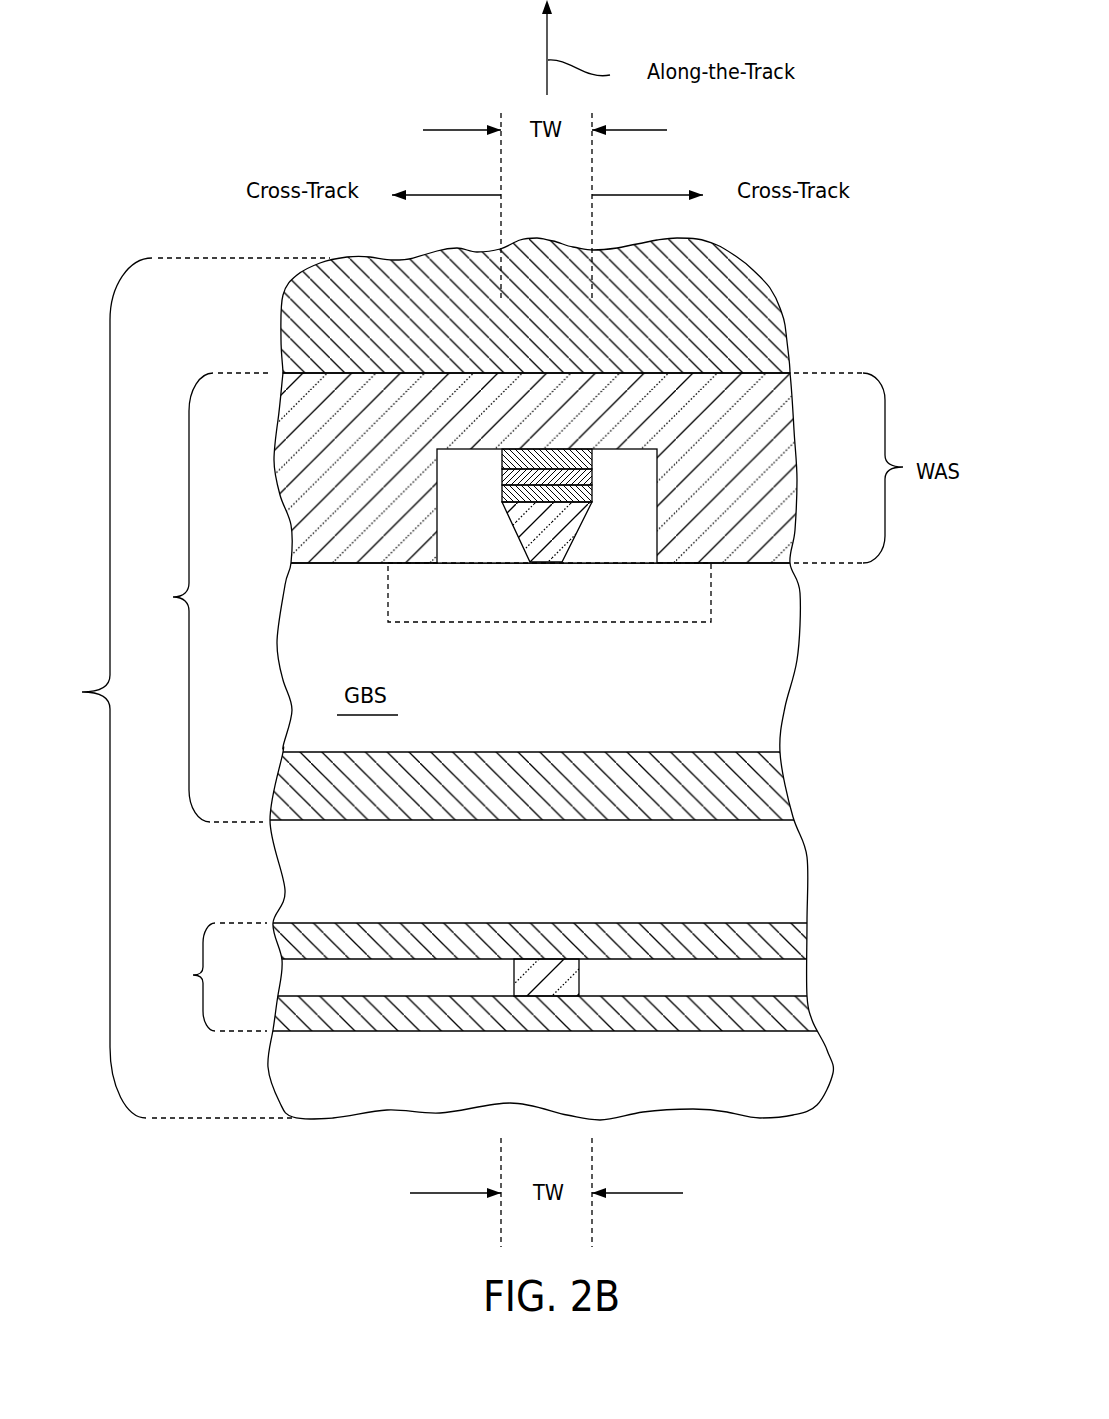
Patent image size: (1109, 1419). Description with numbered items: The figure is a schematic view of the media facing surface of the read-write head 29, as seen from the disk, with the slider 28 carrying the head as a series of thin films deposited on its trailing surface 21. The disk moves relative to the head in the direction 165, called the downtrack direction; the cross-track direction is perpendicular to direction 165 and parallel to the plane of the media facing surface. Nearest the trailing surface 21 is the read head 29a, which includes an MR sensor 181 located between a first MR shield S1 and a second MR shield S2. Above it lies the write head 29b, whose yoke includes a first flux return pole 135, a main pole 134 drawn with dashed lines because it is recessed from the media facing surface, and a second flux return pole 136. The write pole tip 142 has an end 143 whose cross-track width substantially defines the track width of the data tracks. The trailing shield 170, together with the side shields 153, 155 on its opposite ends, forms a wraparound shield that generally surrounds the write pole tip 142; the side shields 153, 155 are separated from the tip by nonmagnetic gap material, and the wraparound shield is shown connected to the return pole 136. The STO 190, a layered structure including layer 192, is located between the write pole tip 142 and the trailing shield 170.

The direction 165 is at (548, 30).
The second flux return pole 136 is at (757, 281).
The trailing shield 170 is at (702, 386).
The first side shield 153 is at (789, 442).
The second side shield 155 is at (296, 452).
The STO 190 is at (498, 451).
The middle layer of stack 192 is at (592, 481).
The pole tip 142 is at (580, 530).
The end 143 is at (553, 560).
The main pole 134 is at (693, 610).
The first flux return pole 135 is at (767, 787).
The slider 28 is at (807, 871).
The second MR shield S2 is at (797, 939).
The first MR shield S1 is at (790, 1015).
The MR sensor 181 is at (577, 976).
The trailing surface 21 is at (762, 1037).
The read-write head 29 is at (186, 688).
The write head 29b is at (200, 597).
The read head 29a is at (206, 977).